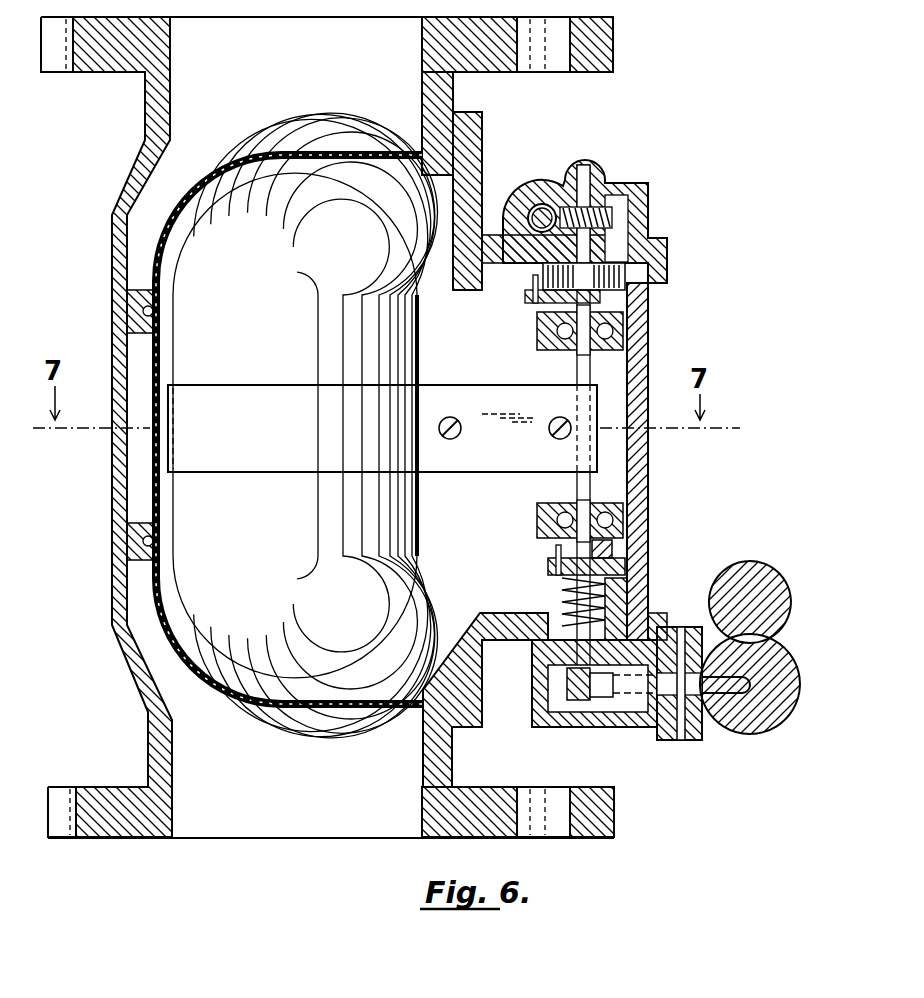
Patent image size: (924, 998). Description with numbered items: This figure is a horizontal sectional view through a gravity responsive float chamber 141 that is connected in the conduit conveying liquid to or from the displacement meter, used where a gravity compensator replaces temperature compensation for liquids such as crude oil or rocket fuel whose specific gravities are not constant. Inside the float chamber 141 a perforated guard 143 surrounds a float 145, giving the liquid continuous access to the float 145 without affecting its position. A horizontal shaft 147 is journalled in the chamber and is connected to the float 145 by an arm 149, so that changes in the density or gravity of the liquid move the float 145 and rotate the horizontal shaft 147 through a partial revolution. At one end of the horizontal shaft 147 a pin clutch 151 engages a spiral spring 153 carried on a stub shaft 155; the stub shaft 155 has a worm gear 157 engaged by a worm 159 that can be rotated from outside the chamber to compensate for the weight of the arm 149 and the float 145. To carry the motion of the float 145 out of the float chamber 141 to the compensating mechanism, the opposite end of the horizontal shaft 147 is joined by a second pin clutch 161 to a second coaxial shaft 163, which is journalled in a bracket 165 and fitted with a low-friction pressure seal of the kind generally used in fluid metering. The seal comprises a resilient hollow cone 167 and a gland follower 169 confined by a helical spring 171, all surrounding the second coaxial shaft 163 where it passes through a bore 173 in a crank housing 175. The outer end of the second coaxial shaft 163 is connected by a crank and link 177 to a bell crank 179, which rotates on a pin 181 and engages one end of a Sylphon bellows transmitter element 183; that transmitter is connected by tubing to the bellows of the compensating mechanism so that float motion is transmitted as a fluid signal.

The float chamber 141 is at (112, 487).
The perforated guard 143 is at (198, 662).
The float 145 is at (392, 357).
The horizontal shaft 147 is at (585, 372).
The arm 149 is at (470, 452).
The pin clutch 151 is at (533, 300).
The spiral spring 153 is at (548, 236).
The stub shaft 155 is at (598, 196).
The worm gear 157 is at (612, 217).
The worm 159 is at (546, 190).
The second pin clutch 161 is at (556, 565).
The second coaxial shaft 163 is at (594, 588).
The bracket 165 is at (640, 590).
The resilient hollow cone 167 is at (549, 624).
The gland follower 169 is at (618, 612).
The helical spring 171 is at (572, 606).
The bore 173 is at (548, 688).
The crank housing 175 is at (550, 728).
The crank and link 177 is at (600, 713).
The bell crank 179 is at (704, 740).
The pin 181 is at (700, 636).
The Sylphon bellows transmitter element 183 is at (772, 648).